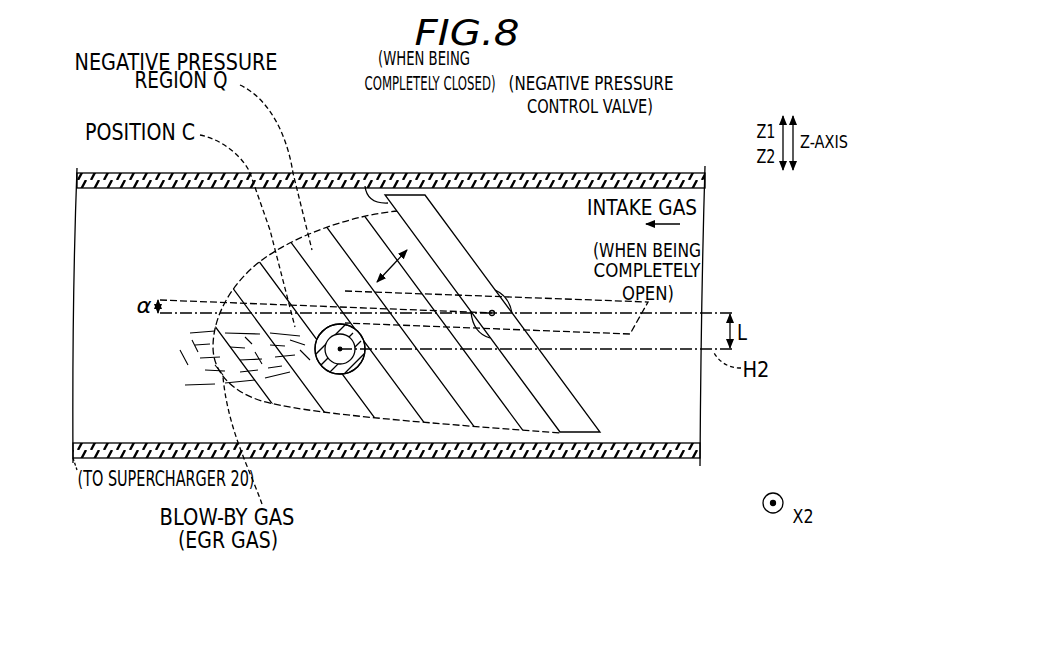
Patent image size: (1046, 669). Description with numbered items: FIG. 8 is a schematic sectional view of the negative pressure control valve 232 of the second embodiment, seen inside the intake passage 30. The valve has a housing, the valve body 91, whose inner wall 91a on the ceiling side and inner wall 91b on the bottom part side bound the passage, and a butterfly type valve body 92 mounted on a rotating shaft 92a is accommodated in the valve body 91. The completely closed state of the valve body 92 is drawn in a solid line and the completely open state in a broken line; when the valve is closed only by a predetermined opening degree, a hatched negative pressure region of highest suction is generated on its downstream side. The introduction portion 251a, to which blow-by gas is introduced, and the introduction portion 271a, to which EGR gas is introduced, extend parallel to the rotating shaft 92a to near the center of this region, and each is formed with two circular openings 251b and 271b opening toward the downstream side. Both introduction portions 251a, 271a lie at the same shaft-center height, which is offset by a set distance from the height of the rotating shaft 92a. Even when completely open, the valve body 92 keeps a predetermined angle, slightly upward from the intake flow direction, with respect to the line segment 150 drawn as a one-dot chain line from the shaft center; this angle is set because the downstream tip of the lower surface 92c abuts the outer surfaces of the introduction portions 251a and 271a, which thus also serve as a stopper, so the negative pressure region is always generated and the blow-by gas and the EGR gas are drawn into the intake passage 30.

The intake passage 30 is at (389, 306).
The valve body 91 is at (389, 315).
The inner wall 91a is at (556, 187).
The inner wall 91b is at (650, 446).
The butterfly type valve body 92 is at (404, 265).
The rotating shaft 92a is at (502, 294).
The lower surface (rear surface) 92c is at (383, 206).
The negative pressure control valve 232 is at (481, 141).
The introduction portion 251a is at (370, 437).
The circular openings 251b is at (332, 440).
The introduction portion 271a is at (363, 358).
The circular openings 271b is at (318, 358).
The line segment 150 is at (716, 311).